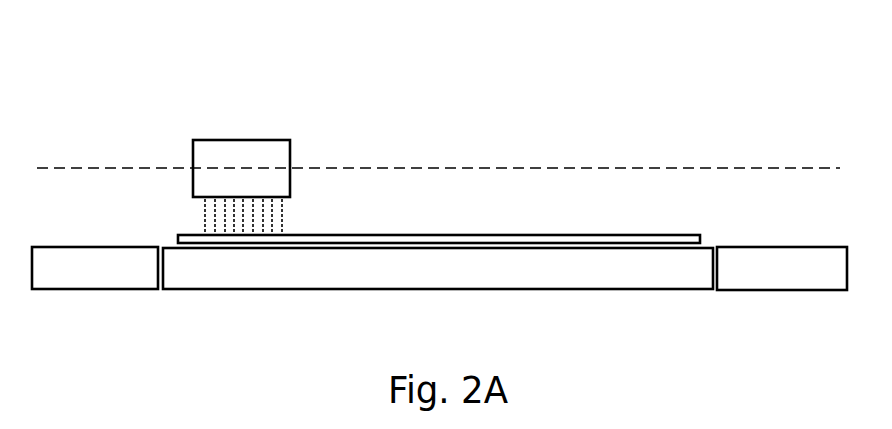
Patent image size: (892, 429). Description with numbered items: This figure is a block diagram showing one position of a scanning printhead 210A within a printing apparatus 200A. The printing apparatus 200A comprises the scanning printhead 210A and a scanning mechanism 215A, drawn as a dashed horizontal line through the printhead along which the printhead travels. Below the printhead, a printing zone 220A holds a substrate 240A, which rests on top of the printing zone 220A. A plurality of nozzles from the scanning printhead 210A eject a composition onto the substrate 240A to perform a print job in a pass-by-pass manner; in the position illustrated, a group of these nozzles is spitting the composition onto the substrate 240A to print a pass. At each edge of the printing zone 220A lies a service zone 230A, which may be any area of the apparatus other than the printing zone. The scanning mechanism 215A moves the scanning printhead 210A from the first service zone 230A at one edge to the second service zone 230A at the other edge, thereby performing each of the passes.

The printing apparatus 200A is at (678, 72).
The scanning printhead 210A is at (238, 140).
The scanning mechanism 215A is at (752, 168).
The printing zone 220A is at (245, 290).
The service zone 230A is at (92, 290).
The substrate 240A is at (658, 235).